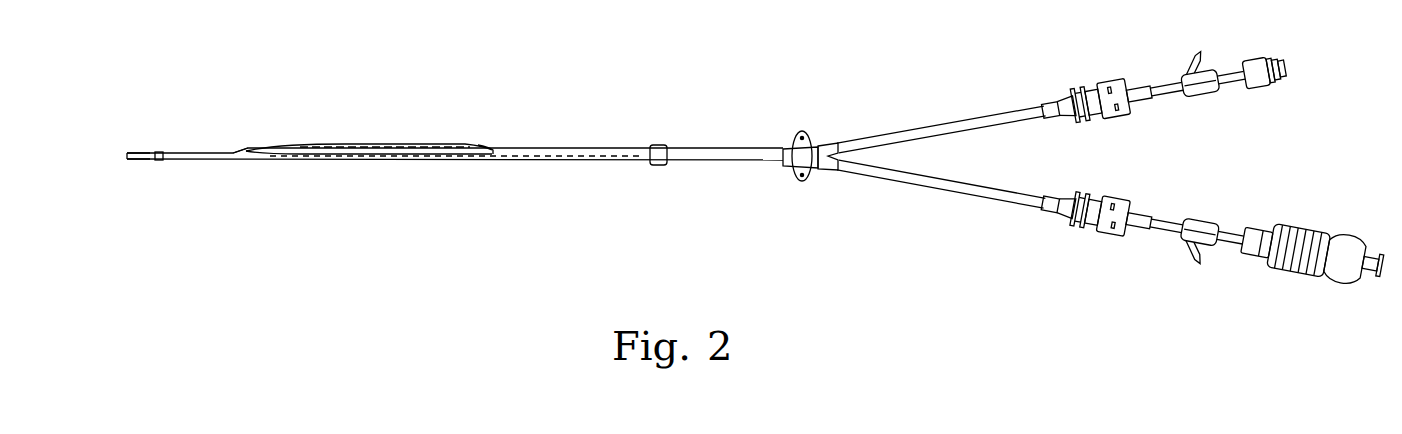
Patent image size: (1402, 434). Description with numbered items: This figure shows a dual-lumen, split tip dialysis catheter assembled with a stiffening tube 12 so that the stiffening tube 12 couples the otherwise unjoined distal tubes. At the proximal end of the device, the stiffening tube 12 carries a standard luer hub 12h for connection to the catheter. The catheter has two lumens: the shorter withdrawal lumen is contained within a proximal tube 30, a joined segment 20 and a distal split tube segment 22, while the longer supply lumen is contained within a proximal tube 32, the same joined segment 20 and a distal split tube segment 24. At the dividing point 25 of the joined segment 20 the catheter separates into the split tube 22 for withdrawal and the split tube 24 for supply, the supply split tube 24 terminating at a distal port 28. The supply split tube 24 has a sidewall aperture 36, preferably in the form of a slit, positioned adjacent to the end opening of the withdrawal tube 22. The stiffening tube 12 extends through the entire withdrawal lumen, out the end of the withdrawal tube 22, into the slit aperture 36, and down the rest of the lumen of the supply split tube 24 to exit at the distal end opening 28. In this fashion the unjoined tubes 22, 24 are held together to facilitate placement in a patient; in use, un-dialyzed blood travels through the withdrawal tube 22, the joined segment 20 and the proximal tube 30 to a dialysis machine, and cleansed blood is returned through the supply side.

The stiffening tube 12 is at (122, 162).
The luer hub 12h is at (1303, 227).
The joined segment 20 is at (600, 151).
The distal split tube segment 22 is at (383, 159).
The distal split tube segment 24 is at (346, 141).
The dividing point 25 is at (486, 147).
The distal port 28 is at (153, 151).
The proximal tube 30 is at (963, 194).
The proximal tube 32 is at (980, 116).
The sidewall aperture 36 is at (238, 163).